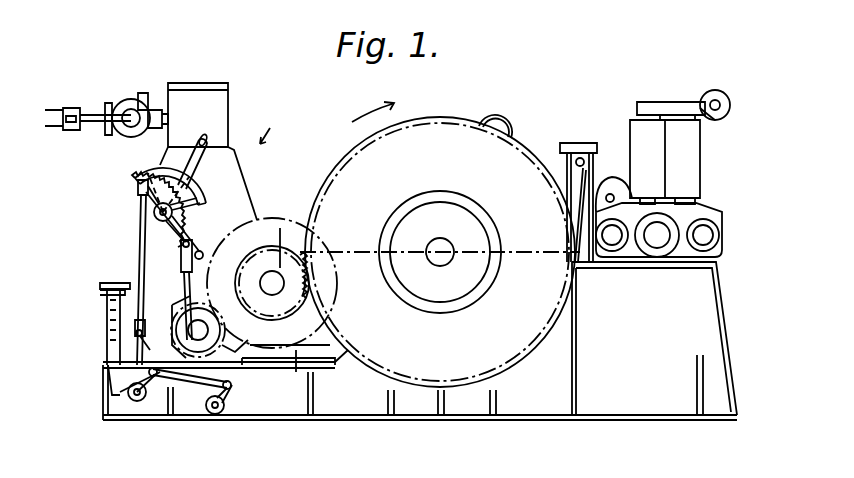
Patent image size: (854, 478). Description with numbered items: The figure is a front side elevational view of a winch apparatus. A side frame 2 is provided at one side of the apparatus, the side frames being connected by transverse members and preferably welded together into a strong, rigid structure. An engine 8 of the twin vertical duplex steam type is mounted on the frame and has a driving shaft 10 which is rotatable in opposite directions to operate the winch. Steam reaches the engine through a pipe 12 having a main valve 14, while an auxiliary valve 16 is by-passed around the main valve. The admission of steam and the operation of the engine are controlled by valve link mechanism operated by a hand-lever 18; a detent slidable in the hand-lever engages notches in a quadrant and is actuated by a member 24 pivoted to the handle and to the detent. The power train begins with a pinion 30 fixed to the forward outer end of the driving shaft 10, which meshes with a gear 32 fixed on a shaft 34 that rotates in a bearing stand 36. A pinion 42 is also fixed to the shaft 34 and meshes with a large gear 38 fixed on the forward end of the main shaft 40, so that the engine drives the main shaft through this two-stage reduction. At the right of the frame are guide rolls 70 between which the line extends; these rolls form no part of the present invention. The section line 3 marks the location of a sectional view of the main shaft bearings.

The side frame 2 is at (520, 405).
The support / section line 3 is at (573, 143).
The engine 8 is at (272, 126).
The driving shaft 10 is at (128, 342).
The pipe 12 is at (68, 108).
The main valve 14 is at (126, 108).
The auxiliary valve 16 is at (130, 124).
The hand-lever 18 is at (200, 160).
The member 24 is at (208, 151).
The pinion 30 is at (184, 300).
The gear 32 is at (242, 237).
The shaft 34 is at (270, 272).
The bearing stand 36 is at (298, 372).
The gear 38 is at (456, 124).
The main shaft 40 is at (445, 250).
The pinion 42 is at (282, 228).
The guide rolls 70 is at (663, 173).